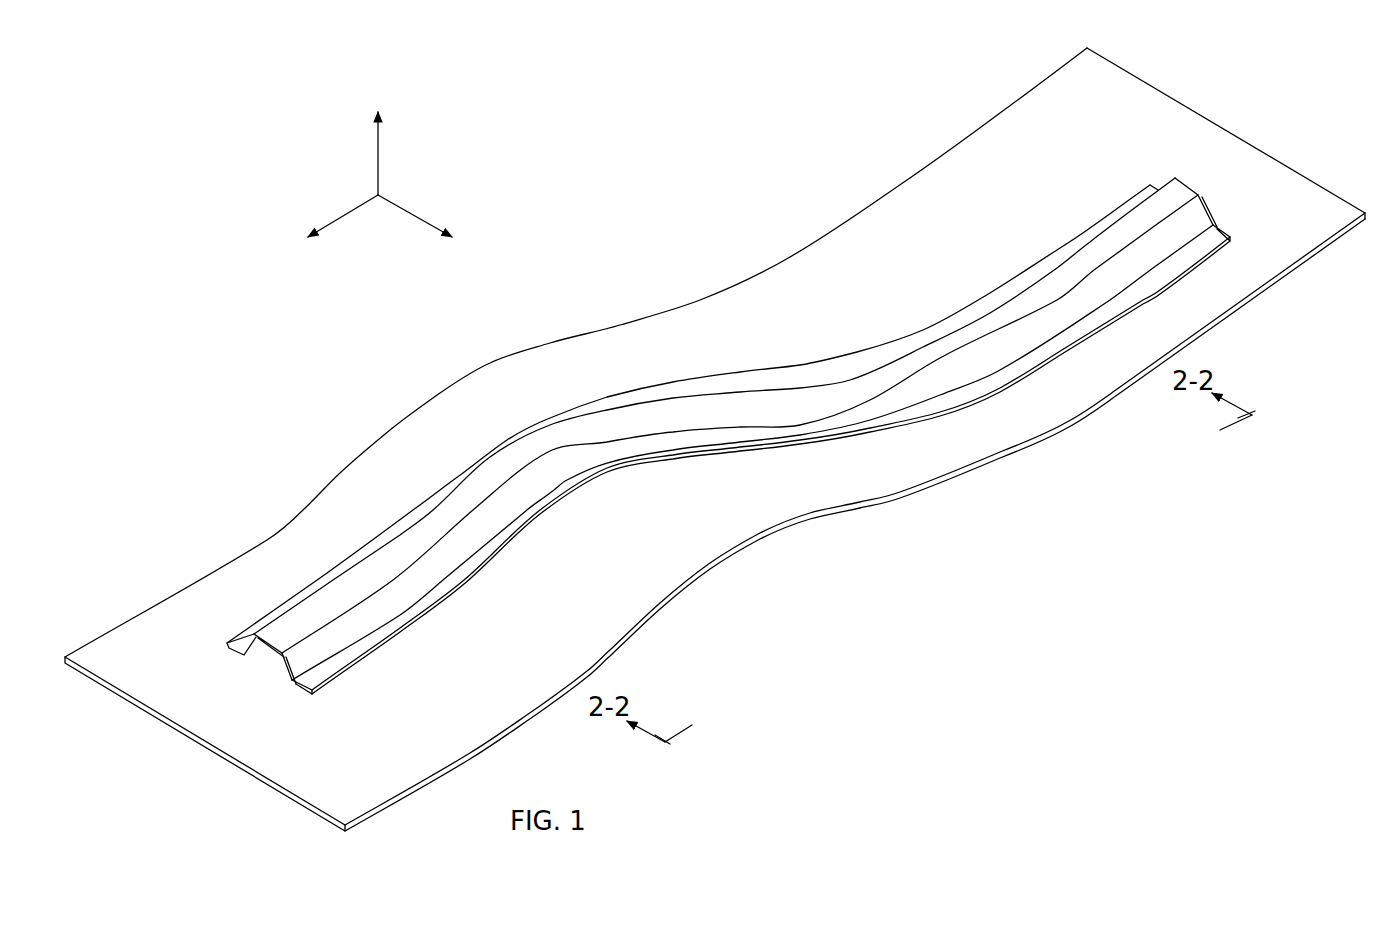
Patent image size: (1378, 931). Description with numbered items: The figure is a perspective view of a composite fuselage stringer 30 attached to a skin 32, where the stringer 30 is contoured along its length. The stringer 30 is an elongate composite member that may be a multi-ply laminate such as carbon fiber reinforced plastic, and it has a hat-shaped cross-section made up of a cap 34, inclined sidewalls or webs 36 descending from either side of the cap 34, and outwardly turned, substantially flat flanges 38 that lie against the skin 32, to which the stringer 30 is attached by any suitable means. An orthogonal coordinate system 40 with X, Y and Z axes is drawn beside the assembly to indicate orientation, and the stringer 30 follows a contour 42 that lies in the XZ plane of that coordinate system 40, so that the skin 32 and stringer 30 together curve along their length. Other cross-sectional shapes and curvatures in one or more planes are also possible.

The composite fuselage stringer 30 is at (597, 515).
The skin 32 is at (1285, 172).
The cap 34 is at (292, 618).
The inclined sidewalls or webs 36 is at (363, 565).
The flanges 38 is at (360, 652).
The orthogonal coordinate system 40 is at (350, 168).
The contour 42 is at (645, 343).